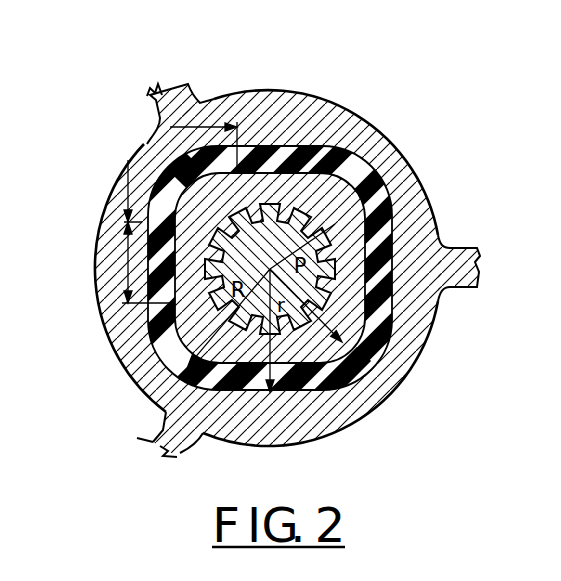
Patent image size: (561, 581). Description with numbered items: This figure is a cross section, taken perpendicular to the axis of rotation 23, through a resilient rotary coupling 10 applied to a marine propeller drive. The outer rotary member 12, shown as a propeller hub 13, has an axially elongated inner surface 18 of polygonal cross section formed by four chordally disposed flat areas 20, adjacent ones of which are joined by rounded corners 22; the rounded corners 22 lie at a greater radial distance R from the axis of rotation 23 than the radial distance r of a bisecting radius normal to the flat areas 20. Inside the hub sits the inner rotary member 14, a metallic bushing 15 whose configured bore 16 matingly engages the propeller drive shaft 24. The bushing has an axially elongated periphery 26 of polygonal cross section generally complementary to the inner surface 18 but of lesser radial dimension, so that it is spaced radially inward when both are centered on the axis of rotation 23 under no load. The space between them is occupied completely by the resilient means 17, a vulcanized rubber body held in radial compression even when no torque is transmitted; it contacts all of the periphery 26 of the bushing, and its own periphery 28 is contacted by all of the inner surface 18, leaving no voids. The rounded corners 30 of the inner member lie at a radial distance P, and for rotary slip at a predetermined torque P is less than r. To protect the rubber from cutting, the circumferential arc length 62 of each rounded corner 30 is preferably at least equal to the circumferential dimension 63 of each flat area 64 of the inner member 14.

The resilient rotary coupling 10 is at (222, 88).
The outer rotary member 12 is at (144, 143).
The propeller hub 13 is at (440, 160).
The inner rotary member 14 is at (395, 206).
The bushing 15 is at (442, 238).
The configured bore 16 is at (270, 269).
The resilient means 17 is at (345, 380).
The inner surface 18 is at (300, 405).
The flat areas 20 is at (130, 243).
The rounded corners 22 is at (170, 162).
The axis of rotation 23 is at (321, 168).
The propeller drive shaft 24 is at (300, 158).
The periphery 26 is at (365, 165).
The periphery of the resilient means 28 is at (340, 244).
The corners 30 is at (165, 358).
The circumferential arc length 62 is at (128, 160).
The circumferential dimension 63 is at (97, 283).
The flat area 64 is at (125, 337).